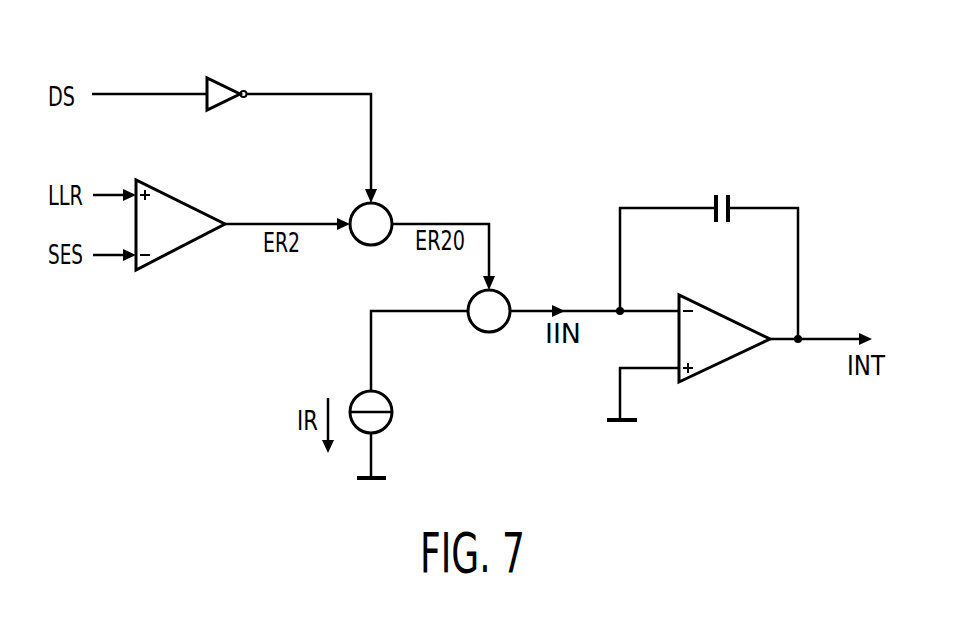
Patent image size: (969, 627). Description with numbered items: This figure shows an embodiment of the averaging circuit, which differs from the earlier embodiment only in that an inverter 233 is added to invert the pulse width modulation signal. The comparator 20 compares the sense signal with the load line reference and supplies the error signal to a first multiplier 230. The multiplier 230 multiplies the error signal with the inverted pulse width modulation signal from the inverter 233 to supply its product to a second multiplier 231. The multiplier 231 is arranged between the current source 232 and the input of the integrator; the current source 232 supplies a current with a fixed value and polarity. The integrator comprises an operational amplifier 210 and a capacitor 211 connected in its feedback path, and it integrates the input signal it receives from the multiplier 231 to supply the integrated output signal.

The inverter 233 is at (222, 78).
The comparator 20 is at (181, 200).
The multiplier 230 is at (356, 209).
The multiplier 231 is at (490, 333).
The current source 232 is at (392, 418).
The capacitor 211 is at (723, 195).
The operational amplifier 210 is at (730, 361).